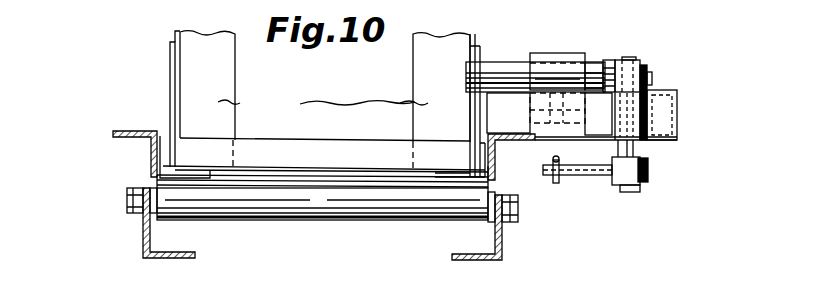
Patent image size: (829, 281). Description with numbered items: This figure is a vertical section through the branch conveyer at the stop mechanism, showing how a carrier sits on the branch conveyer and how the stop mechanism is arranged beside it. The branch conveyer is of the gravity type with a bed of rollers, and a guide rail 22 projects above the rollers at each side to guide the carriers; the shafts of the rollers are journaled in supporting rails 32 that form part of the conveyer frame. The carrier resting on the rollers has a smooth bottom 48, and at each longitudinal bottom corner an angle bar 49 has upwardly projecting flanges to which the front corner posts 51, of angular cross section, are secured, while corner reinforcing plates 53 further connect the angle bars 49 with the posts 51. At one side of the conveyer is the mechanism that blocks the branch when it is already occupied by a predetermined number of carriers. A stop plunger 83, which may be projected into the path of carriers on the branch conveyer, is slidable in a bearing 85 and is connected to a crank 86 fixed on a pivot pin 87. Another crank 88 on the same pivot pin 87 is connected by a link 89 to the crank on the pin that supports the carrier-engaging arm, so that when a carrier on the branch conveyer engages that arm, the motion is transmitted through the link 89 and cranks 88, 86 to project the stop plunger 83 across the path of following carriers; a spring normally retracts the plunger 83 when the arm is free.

The guide rail 22 is at (113, 134).
The supporting rails 32 is at (143, 228).
The smooth bottom 48 is at (160, 178).
The angle bar 49 is at (163, 136).
The front corner posts 51 is at (324, 100).
The corner reinforcing plates 53 is at (170, 48).
The stop plunger 83 is at (497, 67).
The bearing 85 is at (545, 58).
The crank 86 is at (608, 67).
The pivot pin 87 is at (633, 65).
The crank 88 is at (588, 175).
The link 89 is at (552, 160).